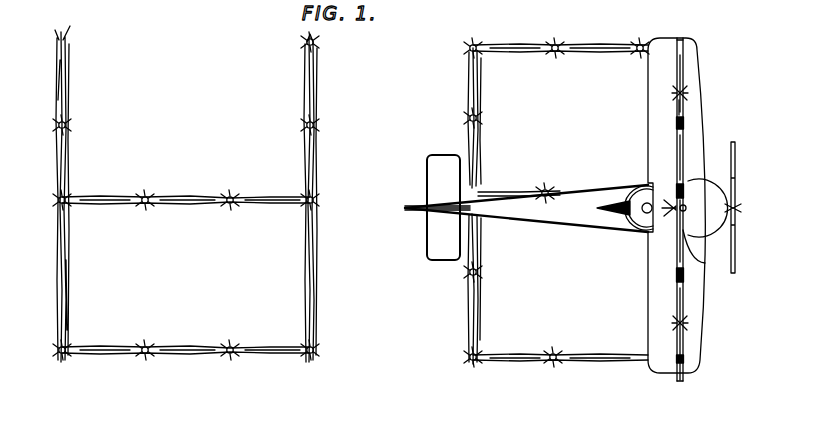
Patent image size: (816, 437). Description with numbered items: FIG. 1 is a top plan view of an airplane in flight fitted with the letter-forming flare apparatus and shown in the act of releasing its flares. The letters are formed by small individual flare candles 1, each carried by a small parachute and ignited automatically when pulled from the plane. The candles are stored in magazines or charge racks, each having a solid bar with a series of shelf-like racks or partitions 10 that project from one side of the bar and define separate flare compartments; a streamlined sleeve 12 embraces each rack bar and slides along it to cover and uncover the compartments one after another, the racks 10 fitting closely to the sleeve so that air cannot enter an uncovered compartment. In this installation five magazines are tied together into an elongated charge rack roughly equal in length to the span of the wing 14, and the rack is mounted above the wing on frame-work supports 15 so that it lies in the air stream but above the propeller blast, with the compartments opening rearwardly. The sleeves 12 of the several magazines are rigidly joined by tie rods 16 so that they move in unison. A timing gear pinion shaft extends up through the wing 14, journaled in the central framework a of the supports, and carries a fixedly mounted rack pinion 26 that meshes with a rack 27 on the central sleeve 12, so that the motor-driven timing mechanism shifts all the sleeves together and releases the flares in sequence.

The flare candle 1 is at (228, 352).
The shelf-like racks or partitions 10 is at (682, 38).
The sleeve 12 is at (683, 63).
The wing 14 is at (656, 86).
The frame-work supports 15 is at (688, 94).
The tie rods 16 is at (683, 107).
The rack pinion 26 is at (706, 236).
The rack 27 is at (705, 263).
The central framework a is at (729, 207).